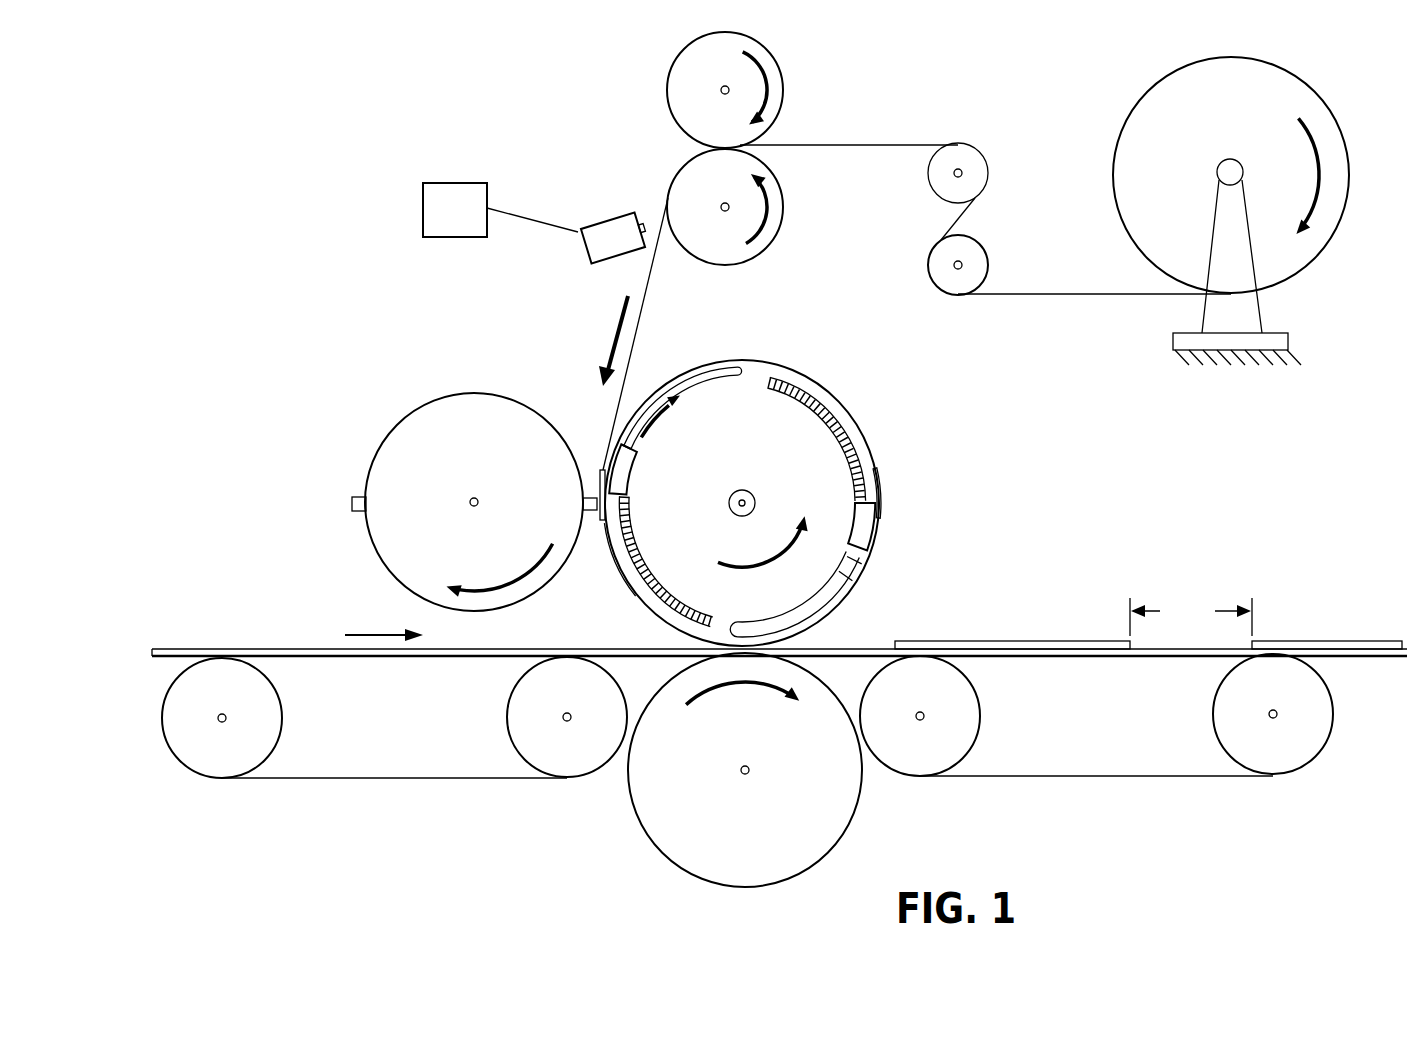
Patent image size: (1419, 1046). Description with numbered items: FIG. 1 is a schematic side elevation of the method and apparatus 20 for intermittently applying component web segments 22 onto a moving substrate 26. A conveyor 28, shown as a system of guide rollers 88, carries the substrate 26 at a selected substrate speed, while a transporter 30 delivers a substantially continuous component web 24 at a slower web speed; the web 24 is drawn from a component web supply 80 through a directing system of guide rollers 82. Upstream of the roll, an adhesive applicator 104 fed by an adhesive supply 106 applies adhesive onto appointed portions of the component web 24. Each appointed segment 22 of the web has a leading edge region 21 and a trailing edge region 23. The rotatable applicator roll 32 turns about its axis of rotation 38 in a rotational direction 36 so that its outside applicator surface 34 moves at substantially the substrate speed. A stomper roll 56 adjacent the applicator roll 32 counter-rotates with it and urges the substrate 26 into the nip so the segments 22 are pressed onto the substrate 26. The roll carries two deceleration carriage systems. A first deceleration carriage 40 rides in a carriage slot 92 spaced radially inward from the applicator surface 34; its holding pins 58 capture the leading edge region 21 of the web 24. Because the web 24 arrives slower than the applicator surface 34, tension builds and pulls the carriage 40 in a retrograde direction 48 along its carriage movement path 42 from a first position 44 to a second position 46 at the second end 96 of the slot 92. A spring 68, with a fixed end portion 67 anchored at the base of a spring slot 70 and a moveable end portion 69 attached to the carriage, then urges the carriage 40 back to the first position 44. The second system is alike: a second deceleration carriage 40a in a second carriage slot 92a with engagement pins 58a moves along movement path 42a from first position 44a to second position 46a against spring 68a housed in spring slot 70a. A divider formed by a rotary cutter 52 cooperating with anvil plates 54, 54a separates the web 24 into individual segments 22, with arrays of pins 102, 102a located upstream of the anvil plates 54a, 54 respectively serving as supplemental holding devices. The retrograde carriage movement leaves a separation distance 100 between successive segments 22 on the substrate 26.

The method and apparatus 20 is at (541, 347).
The leading edge region 21 is at (1120, 641).
The component web segment 22 is at (985, 641).
The trailing edge region 23 is at (897, 641).
The component web 24 is at (644, 300).
The moving substrate 26 is at (240, 648).
The conveyor 28 is at (355, 778).
The transporter 30 is at (668, 88).
The applicator roll 32 is at (808, 374).
The applicator surface 34 is at (756, 363).
The rotational direction 36 is at (765, 565).
The axis of rotation 38 is at (745, 498).
The deceleration carriage 40 is at (626, 470).
The second deceleration carriage 40a is at (864, 535).
The carriage movement path 42 is at (638, 446).
The movement path 42a is at (858, 580).
The first position 44 is at (628, 490).
The first position 44a is at (856, 510).
The second position 46 is at (740, 378).
The second position 46a is at (742, 623).
The retrograde direction 48 is at (682, 410).
The rotary cutter 52 is at (420, 410).
The anvil plate 54 is at (596, 540).
The second anvil plate 54a is at (881, 472).
The stomper roll 56 is at (850, 810).
The holding pins 58 is at (604, 462).
The second engagement pins 58a is at (882, 517).
The fixed end portion 67 is at (722, 625).
The spring 68 is at (640, 564).
The spring 68a is at (812, 397).
The moveable end portion 69 is at (630, 500).
The spring slot 70 is at (706, 615).
The spring slot 70a is at (843, 428).
The component web supply 80 is at (1120, 150).
The guide rollers 82 is at (985, 258).
The guide rollers 88 is at (508, 710).
The carriage slot 92 is at (680, 388).
The second carriage slot 92a is at (828, 592).
The second end 96 is at (738, 362).
The separation distance 100 is at (1191, 617).
The array of pins 102 is at (880, 465).
The array of pins 102a is at (630, 598).
The adhesive applicator 104 is at (608, 218).
The adhesive supply 106 is at (440, 240).